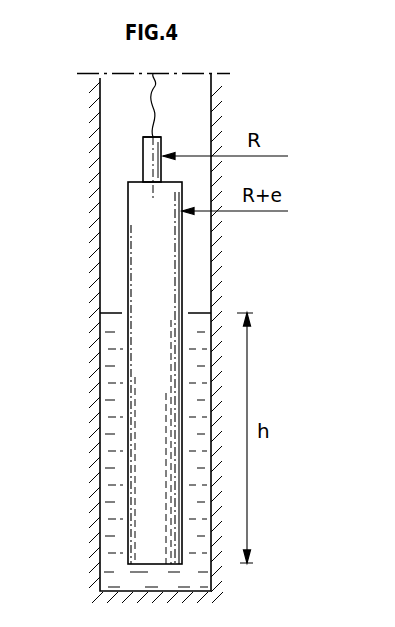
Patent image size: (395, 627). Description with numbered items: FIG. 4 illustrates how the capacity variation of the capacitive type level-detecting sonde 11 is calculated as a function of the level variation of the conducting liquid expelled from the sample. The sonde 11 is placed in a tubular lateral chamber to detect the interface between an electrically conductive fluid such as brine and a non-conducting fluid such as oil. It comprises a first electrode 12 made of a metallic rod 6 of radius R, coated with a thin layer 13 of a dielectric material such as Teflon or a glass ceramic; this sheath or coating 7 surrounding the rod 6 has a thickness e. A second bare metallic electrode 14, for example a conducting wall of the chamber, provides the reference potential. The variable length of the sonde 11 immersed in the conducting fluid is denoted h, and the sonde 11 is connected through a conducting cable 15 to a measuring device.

The rod 6 is at (156, 137).
The sheath or coating 7 is at (140, 253).
The capacitive type level-detecting sonde 11 is at (104, 222).
The first electrode 12 is at (143, 139).
The thin layer of dielectric material 13 is at (166, 254).
The second bare metallic electrode 14 is at (212, 281).
The conducting cable 15 is at (146, 104).